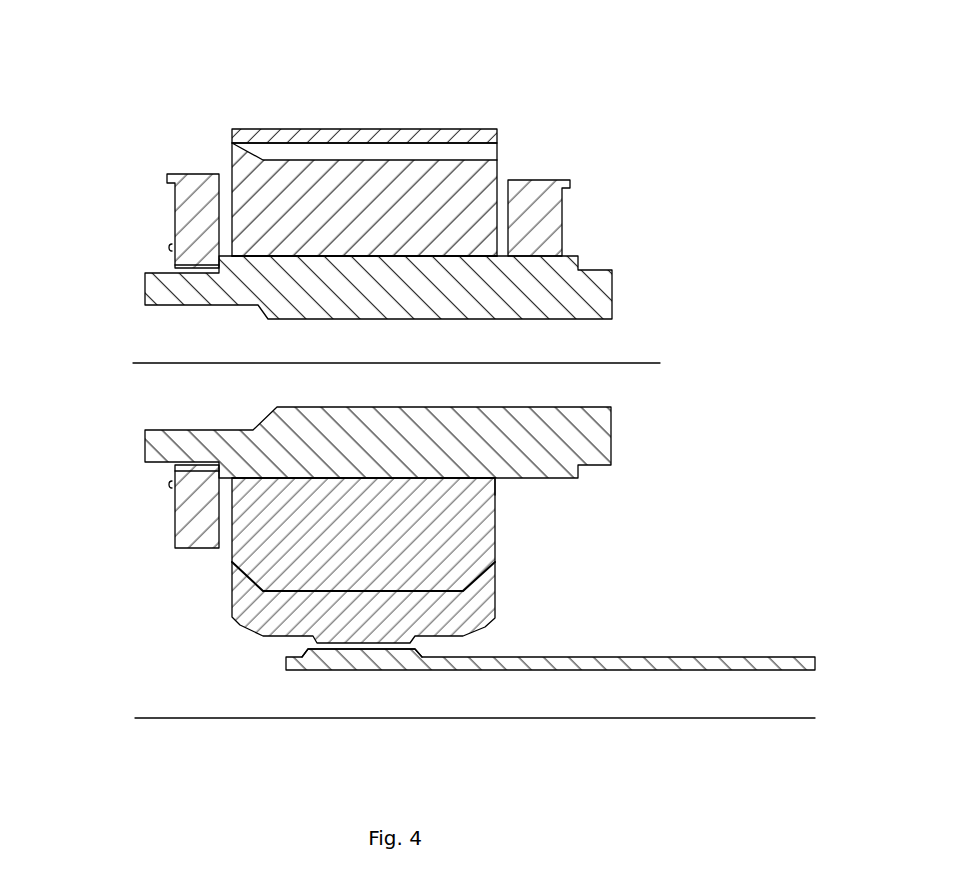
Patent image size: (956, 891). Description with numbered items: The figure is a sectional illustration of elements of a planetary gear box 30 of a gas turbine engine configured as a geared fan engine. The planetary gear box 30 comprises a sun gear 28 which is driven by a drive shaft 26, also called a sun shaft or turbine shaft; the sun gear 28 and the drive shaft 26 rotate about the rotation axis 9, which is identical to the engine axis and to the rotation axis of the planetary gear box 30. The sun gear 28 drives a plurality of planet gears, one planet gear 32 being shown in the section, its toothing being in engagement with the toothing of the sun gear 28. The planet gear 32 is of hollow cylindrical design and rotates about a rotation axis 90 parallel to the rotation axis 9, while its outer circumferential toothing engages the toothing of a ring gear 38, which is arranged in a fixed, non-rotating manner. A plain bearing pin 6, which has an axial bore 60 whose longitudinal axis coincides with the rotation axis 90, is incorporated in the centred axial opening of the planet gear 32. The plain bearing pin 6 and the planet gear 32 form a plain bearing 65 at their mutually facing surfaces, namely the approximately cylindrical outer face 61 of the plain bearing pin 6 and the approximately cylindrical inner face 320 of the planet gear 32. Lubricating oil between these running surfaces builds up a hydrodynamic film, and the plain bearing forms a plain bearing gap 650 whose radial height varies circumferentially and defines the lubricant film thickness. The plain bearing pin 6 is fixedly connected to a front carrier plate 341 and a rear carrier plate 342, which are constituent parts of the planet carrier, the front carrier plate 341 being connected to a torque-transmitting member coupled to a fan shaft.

The planetary gear box 30 is at (106, 250).
The front carrier plate 341 is at (188, 205).
The rear carrier plate 342 is at (556, 212).
The ring gear 38 is at (458, 128).
The planet gear 32 is at (497, 151).
The outer face 61 is at (297, 250).
The plain bearing pin 6 is at (587, 297).
The axial bore 60 is at (604, 344).
The rotation axis 90 is at (640, 369).
The inner face 320 is at (302, 266).
The plain bearing 65 is at (367, 258).
The plain bearing gap 650 is at (511, 488).
The sun gear 28 is at (465, 625).
The drive shaft 26 is at (527, 652).
The rotation axis 9 is at (320, 720).